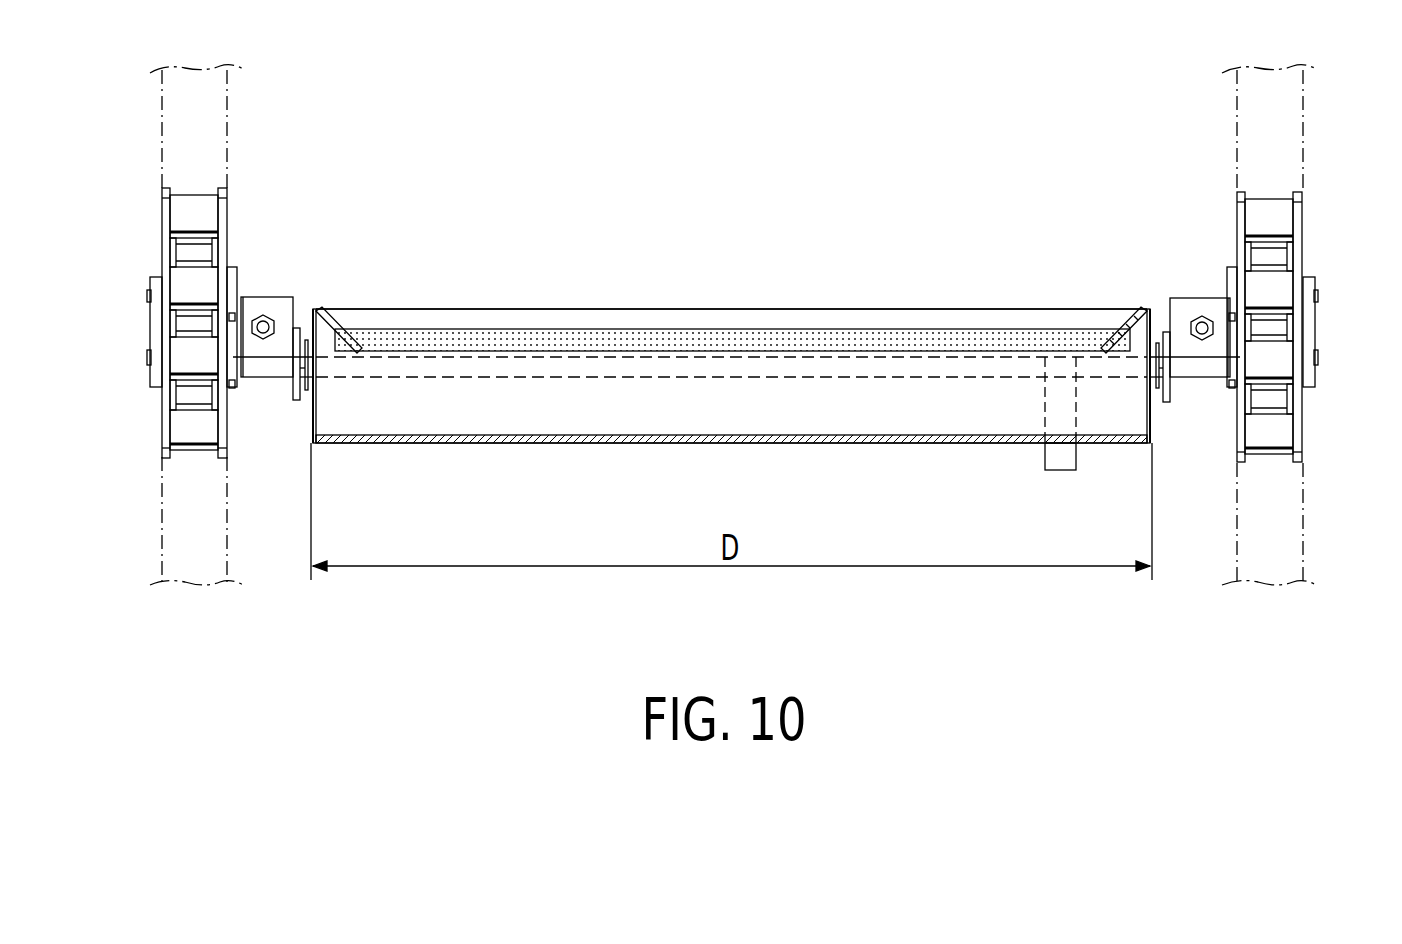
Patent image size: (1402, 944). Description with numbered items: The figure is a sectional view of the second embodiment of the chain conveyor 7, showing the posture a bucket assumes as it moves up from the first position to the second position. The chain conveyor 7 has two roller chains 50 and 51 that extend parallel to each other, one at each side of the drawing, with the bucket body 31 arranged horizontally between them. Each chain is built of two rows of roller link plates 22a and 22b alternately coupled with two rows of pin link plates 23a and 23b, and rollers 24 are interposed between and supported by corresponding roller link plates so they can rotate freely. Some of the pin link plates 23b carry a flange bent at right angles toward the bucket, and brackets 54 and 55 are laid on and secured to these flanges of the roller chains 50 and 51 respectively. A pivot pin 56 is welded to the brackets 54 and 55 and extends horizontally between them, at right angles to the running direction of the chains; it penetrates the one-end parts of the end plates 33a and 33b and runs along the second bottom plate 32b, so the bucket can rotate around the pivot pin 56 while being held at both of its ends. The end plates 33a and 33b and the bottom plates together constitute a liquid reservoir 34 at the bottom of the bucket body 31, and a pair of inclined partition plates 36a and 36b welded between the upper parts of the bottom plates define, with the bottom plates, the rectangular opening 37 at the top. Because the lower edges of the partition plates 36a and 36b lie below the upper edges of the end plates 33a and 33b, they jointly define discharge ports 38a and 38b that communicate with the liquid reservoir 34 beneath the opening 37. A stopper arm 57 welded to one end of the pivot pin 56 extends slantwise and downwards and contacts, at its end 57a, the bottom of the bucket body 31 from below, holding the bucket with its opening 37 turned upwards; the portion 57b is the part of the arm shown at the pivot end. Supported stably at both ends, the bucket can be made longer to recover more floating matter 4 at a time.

The chain conveyor 7 is at (138, 165).
The roller chain 50 is at (196, 191).
The roller chain 51 is at (1272, 196).
The roller 24 is at (183, 288).
The pin link plate 23a is at (156, 325).
The pin link plate 23b is at (178, 368).
The roller link plate 22a is at (166, 437).
The roller link plate 22b is at (218, 440).
The bracket 54 is at (276, 297).
The bracket 55 is at (1188, 298).
The end plate 33a is at (312, 416).
The end plate 33b is at (1155, 415).
The bucket body 31 is at (655, 430).
The opening 37 is at (572, 320).
The liquid reservoir 34 is at (912, 425).
The floating matter 4 is at (738, 336).
The pivot pin 56 is at (660, 362).
The second bottom plate 32b is at (831, 396).
The discharge port 38a is at (318, 306).
The discharge port 38b is at (1152, 306).
The partition plate 36a is at (343, 318).
The partition plate 36b is at (1128, 312).
The stopper arm 57 is at (1050, 402).
The end of stopper arm 57a is at (1060, 470).
The projection base 57b is at (1057, 325).